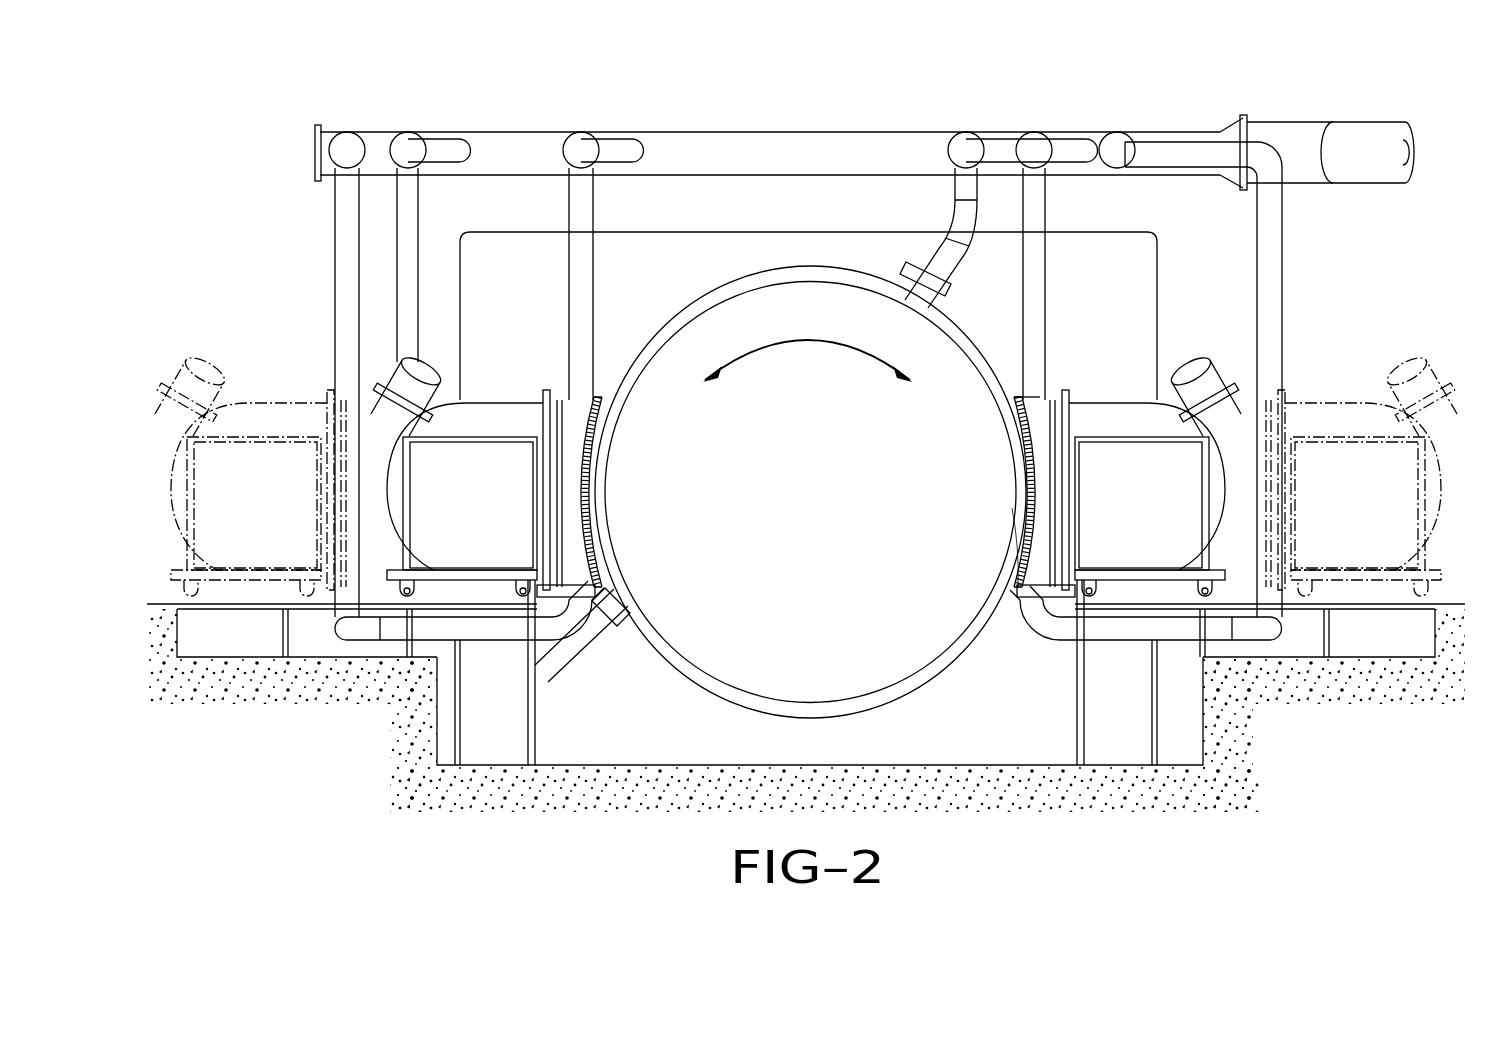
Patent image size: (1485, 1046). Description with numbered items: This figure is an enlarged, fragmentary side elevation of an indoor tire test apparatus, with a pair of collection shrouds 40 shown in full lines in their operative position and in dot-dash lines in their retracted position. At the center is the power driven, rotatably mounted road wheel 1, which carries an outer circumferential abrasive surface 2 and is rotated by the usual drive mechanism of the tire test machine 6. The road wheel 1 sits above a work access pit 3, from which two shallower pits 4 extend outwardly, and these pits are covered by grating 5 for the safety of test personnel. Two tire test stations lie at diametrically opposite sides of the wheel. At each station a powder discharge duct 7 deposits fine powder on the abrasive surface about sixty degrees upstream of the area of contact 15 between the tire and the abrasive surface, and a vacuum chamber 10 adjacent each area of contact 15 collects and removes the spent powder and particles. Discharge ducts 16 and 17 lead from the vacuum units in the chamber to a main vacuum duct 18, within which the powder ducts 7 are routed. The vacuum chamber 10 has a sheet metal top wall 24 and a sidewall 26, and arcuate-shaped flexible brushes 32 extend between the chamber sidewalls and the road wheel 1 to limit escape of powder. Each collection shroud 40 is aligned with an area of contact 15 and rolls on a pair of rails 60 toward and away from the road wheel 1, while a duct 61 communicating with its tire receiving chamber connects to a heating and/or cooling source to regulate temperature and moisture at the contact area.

The road wheel 1 is at (735, 708).
The abrasive surface 2 is at (887, 707).
The work access pit 3 is at (601, 742).
The shallower pits 4 is at (210, 640).
The grating 5 is at (250, 612).
The tire test machine 6 is at (1162, 254).
The powder discharge duct 7 is at (419, 210).
The vacuum chamber 10 is at (594, 554).
The area of contact 15 is at (602, 490).
The discharge duct 16 is at (338, 228).
The discharge duct 17 is at (594, 210).
The main vacuum duct 18 is at (792, 150).
The top wall 24 is at (1035, 398).
The sidewall 26 is at (1028, 528).
The arcuate-shaped flexible brushes 32 is at (598, 440).
The collection shroud 40 is at (493, 396).
The rails 60 is at (266, 603).
The duct 61 is at (395, 378).